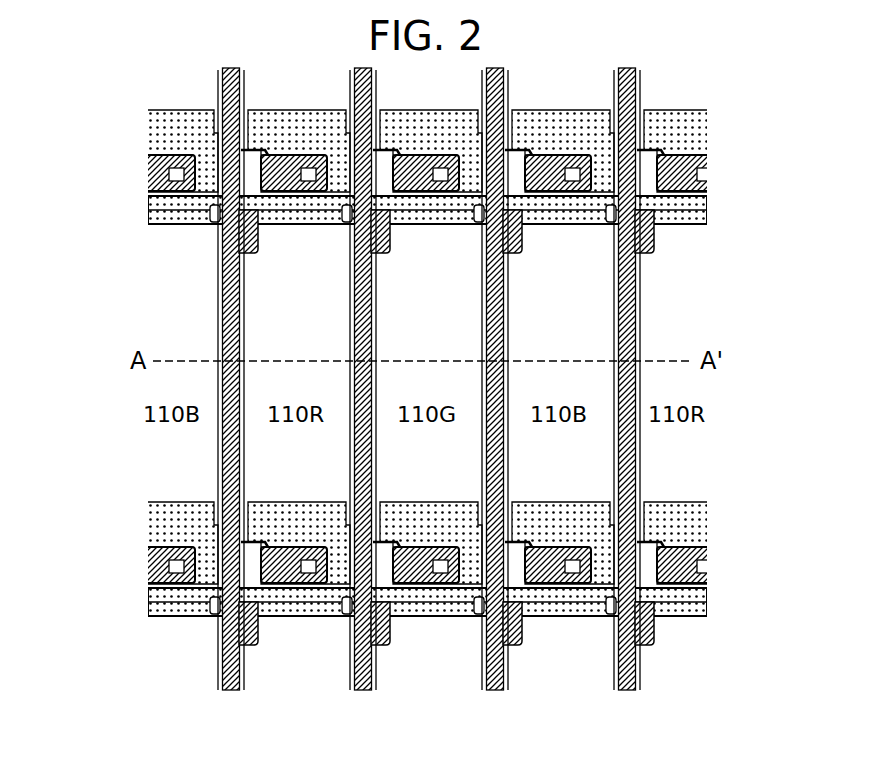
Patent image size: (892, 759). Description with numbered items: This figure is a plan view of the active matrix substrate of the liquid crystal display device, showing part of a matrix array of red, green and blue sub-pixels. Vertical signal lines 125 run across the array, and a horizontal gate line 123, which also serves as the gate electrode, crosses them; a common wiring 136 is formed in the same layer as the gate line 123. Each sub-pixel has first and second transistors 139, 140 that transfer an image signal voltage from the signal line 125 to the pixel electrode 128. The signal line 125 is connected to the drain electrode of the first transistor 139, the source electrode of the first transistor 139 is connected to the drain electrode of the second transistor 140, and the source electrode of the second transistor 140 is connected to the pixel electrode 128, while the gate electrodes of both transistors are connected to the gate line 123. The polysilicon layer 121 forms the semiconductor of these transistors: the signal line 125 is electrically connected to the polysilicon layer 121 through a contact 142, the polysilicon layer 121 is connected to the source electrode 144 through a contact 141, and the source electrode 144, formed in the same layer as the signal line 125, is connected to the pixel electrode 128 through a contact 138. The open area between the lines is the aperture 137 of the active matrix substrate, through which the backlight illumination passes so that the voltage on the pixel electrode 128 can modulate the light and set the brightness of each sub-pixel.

The polysilicon layer 121 is at (248, 550).
The gate line 123 is at (162, 598).
The signal line 125 is at (363, 688).
The pixel electrode 128 is at (218, 302).
The common wiring 136 is at (165, 500).
The aperture 137 is at (268, 302).
The contact 138 is at (443, 580).
The first transistor 139 is at (518, 645).
The second transistor 140 is at (547, 580).
The contact 141 is at (417, 584).
The contact 142 is at (218, 645).
The source electrode 144 is at (690, 577).